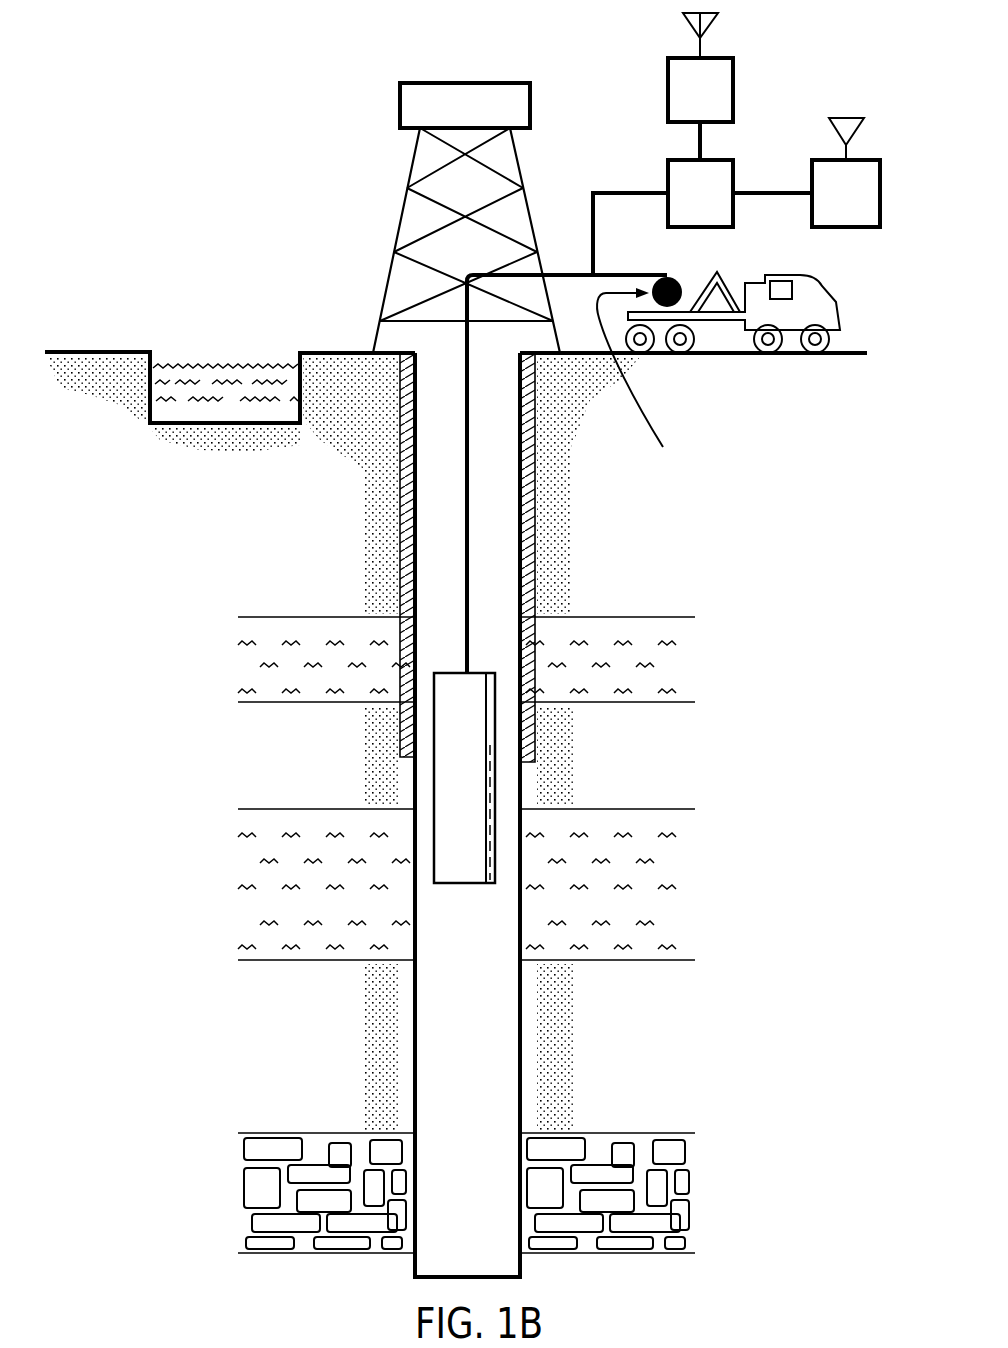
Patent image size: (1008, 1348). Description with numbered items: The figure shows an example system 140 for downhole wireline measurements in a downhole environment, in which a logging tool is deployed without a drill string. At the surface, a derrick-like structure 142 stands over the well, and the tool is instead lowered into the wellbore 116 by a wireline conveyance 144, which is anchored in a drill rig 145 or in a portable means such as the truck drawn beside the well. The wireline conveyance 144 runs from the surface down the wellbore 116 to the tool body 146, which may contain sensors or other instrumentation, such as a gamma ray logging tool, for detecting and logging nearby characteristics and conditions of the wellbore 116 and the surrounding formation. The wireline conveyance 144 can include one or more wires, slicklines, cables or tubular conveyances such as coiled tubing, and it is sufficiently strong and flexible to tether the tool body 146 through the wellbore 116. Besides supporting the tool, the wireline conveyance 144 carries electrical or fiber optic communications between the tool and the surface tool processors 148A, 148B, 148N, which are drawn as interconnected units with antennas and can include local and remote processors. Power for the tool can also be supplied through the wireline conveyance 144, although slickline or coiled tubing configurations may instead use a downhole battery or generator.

The system 140 is at (299, 131).
The drilling rig / derrick 142 is at (543, 139).
The wireline conveyance 144 is at (467, 290).
The drill rig 145 is at (638, 389).
The tool body 146 is at (450, 766).
The wellbore 116 is at (510, 1042).
The tool processor 148A is at (668, 62).
The tool processor 148B is at (733, 162).
The tool processor 148N is at (846, 228).